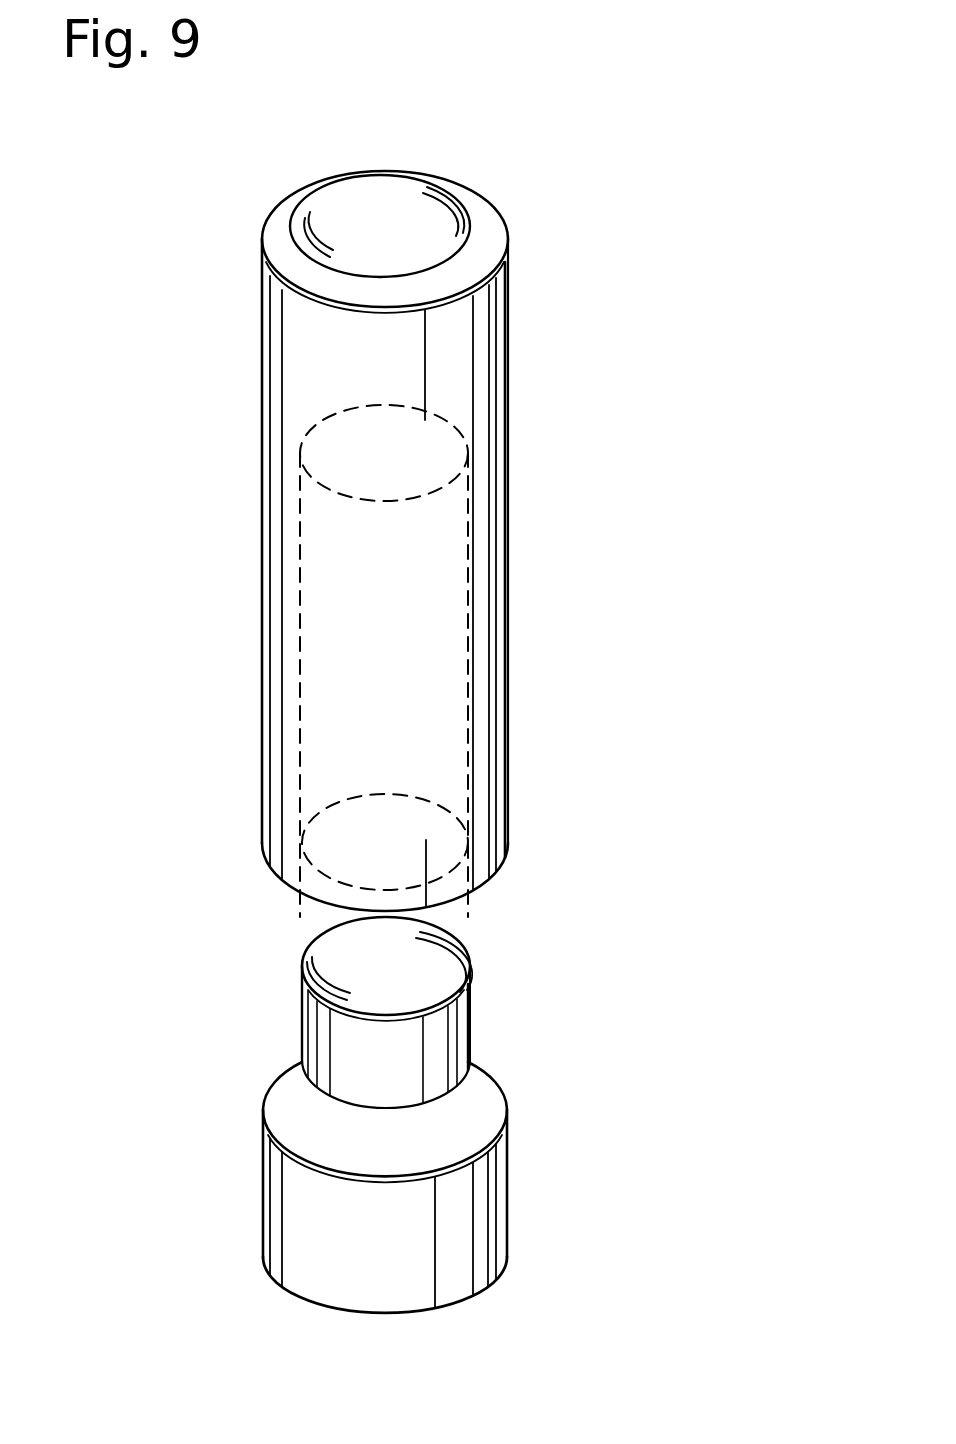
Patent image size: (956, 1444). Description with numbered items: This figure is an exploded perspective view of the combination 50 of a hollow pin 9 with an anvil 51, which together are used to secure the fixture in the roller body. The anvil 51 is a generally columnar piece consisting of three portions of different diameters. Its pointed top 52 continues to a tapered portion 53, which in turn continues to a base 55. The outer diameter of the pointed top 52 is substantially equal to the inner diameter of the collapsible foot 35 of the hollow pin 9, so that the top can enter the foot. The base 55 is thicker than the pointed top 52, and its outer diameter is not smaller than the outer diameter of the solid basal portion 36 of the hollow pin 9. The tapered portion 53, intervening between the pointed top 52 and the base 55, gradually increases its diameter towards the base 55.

The combination 50 is at (560, 167).
The hollow pin 9 is at (492, 410).
The collapsible foot 35 is at (492, 638).
The solid basal portion 36 is at (278, 357).
The pointed top 52 is at (452, 1027).
The tapered portion 53 is at (468, 1112).
The anvil 51 is at (473, 1207).
The base 55 is at (288, 1192).